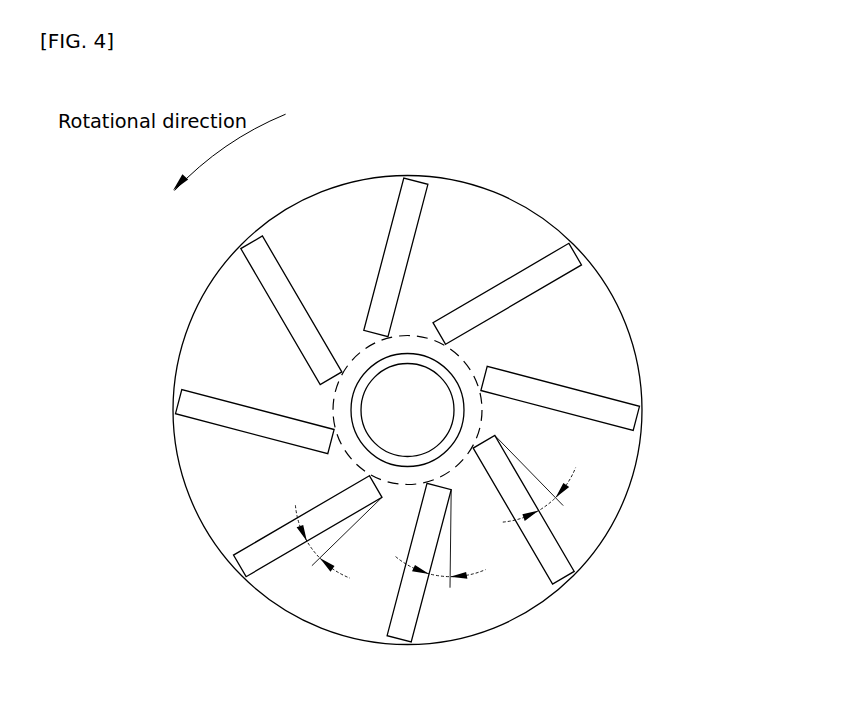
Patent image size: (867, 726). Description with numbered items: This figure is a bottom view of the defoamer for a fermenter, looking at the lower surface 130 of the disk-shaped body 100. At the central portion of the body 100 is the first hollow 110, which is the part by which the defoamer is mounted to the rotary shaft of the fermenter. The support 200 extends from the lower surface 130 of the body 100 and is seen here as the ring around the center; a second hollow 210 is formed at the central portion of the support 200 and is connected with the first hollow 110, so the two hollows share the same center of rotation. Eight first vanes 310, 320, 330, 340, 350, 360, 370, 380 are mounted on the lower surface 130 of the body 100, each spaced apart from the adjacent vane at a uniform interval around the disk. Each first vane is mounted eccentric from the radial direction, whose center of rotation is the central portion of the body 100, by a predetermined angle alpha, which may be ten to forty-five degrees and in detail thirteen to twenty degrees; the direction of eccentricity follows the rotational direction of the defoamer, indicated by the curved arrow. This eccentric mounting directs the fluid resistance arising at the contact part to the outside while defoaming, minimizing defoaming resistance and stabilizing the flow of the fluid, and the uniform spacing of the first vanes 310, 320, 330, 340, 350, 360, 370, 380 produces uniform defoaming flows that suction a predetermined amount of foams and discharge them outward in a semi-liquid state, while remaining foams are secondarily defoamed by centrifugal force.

The body 100 is at (173, 260).
The lower surface 130 is at (308, 215).
The support 200 is at (408, 355).
The first hollow 110 is at (394, 409).
The second hollow 210 is at (407, 410).
The first vane 310 is at (627, 418).
The first vane 320 is at (558, 572).
The first vane 330 is at (398, 632).
The first vane 340 is at (240, 563).
The first vane 350 is at (187, 403).
The first vane 360 is at (253, 238).
The first vane 370 is at (412, 187).
The first vane 380 is at (570, 262).